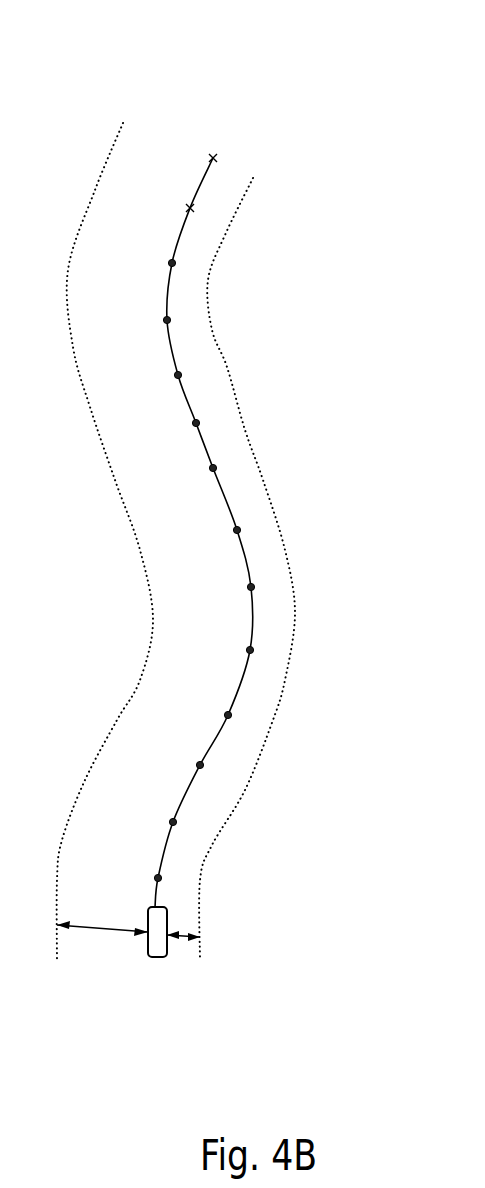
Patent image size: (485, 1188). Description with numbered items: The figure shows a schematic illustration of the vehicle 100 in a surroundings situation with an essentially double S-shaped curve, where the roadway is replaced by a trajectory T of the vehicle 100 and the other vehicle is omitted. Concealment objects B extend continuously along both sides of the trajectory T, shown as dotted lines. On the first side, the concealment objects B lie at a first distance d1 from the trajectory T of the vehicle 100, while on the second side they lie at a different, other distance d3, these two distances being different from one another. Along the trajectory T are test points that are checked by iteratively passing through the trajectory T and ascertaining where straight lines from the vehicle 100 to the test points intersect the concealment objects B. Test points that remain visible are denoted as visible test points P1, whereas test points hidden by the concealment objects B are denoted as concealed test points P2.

The concealment objects B is at (131, 100).
The trajectory T is at (171, 350).
The concealed test points P2 is at (190, 206).
The visible test points P1 is at (181, 375).
The vehicle 100 is at (157, 958).
The other distance d3 is at (102, 915).
The first distance d1 is at (183, 922).